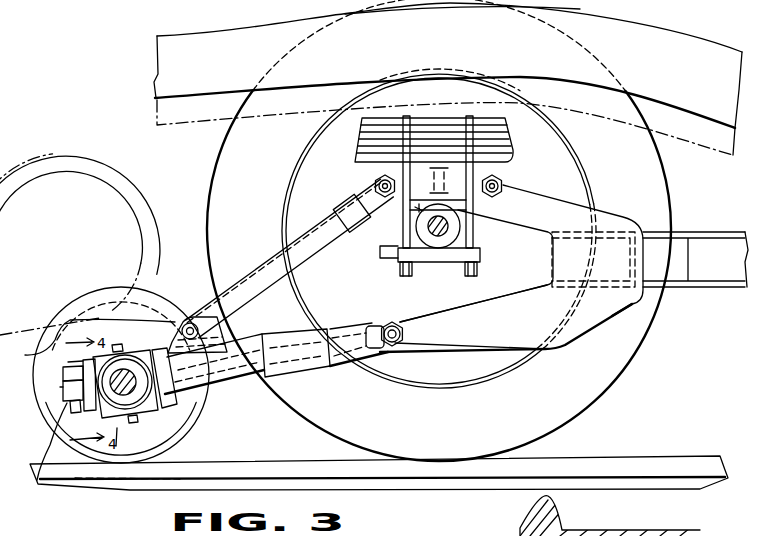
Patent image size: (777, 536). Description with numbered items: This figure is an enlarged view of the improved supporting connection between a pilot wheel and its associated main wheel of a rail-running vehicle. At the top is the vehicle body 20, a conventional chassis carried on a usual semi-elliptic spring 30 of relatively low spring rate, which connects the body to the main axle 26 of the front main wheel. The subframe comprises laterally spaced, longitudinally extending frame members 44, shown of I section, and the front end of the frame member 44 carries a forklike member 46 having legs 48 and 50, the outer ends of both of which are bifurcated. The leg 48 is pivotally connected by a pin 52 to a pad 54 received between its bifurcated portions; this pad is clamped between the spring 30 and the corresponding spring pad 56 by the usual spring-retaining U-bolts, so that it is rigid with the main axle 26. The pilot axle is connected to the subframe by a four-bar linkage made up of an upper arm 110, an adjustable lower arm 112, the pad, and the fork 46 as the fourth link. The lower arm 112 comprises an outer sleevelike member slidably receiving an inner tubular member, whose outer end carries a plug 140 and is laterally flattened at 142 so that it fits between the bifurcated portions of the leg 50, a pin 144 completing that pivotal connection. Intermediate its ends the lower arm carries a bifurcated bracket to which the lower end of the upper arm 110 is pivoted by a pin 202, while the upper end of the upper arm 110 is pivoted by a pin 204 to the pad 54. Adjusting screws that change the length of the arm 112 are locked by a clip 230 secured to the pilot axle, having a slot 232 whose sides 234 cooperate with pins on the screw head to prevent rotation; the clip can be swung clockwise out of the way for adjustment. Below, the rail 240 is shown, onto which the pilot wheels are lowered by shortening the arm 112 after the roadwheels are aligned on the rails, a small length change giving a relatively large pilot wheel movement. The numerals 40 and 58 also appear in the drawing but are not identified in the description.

The body 20 is at (675, 36).
The semi-elliptic spring 30 is at (426, 163).
The pad 54 is at (452, 182).
The pin 52 is at (500, 181).
The pin 204 is at (374, 187).
The main axle 26 is at (448, 228).
The spring pad 56 is at (418, 209).
The engine base plate 58 is at (470, 238).
The leg 48 is at (534, 268).
The forklike member 46 is at (640, 313).
The frame member 44 is at (686, 238).
The leg 50 is at (492, 345).
The plug 140 is at (404, 328).
The laterally flattened portion 142 is at (379, 322).
The pin 144 is at (396, 352).
The upper arm 110 is at (256, 266).
The lower arm 112 is at (297, 378).
The pin 202 is at (190, 322).
The slot 232 is at (66, 402).
The clip 230 is at (30, 355).
The sides of the slot 234 is at (37, 480).
The wheel 40 is at (78, 308).
The rail 240 is at (597, 465).